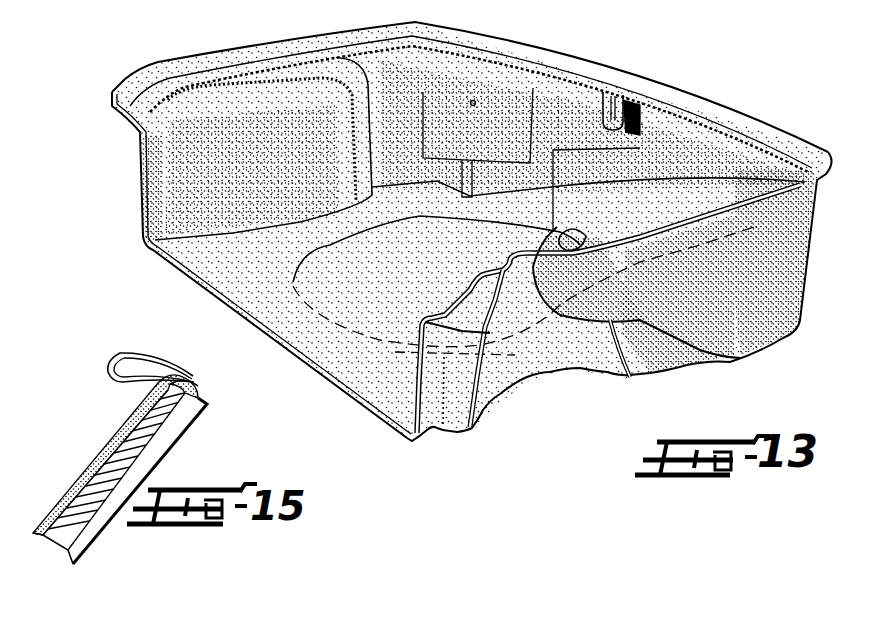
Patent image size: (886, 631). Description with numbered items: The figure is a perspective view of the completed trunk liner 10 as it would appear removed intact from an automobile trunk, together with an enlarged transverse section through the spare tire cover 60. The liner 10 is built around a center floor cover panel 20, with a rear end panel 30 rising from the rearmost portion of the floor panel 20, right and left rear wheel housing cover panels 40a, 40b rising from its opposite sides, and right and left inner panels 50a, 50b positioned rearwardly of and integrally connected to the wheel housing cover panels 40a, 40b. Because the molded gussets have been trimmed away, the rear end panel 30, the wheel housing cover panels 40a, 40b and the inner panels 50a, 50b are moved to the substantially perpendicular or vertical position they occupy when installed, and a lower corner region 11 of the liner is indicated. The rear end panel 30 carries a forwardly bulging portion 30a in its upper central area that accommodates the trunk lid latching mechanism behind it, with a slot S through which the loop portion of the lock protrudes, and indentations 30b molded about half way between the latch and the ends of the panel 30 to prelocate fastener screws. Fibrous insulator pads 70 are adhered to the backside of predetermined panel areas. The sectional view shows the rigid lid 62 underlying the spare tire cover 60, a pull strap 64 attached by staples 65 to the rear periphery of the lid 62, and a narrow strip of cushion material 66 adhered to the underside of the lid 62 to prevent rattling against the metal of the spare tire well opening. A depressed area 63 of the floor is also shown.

In FIG. 13, the trunk liner 10 is at (710, 82).
In FIG. 13, the tray bottom corner 11 is at (768, 340).
In FIG. 13, the center floor cover panel 20 is at (260, 307).
In FIG. 13, the rear end panel 30 is at (710, 125).
In FIG. 13, the forwardly bulging portion 30a is at (620, 98).
In FIG. 13, the indentations 30b is at (475, 101).
In FIG. 13, the right rear wheel housing cover panel 40a is at (232, 80).
In FIG. 13, the left rear wheel housing cover panel 40b is at (445, 390).
In FIG. 13, the right inner panel 50a is at (383, 63).
In FIG. 13, the left inner panel 50b is at (803, 276).
In FIG. 13, the spare tire cover 60 is at (480, 274).
In FIG. 15, the spare tire cover 60 is at (112, 444).
In FIG. 15, the rigid lid 62 is at (67, 529).
In FIG. 13, the depression 63 is at (403, 222).
In FIG. 13, the pull strap 64 is at (585, 237).
In FIG. 15, the pull strap 64 is at (138, 355).
In FIG. 15, the staples 65 is at (196, 383).
In FIG. 15, the strip of cushion material 66 is at (182, 436).
In FIG. 13, the insulator pads 70 is at (545, 355).
In FIG. 13, the slot S is at (610, 90).